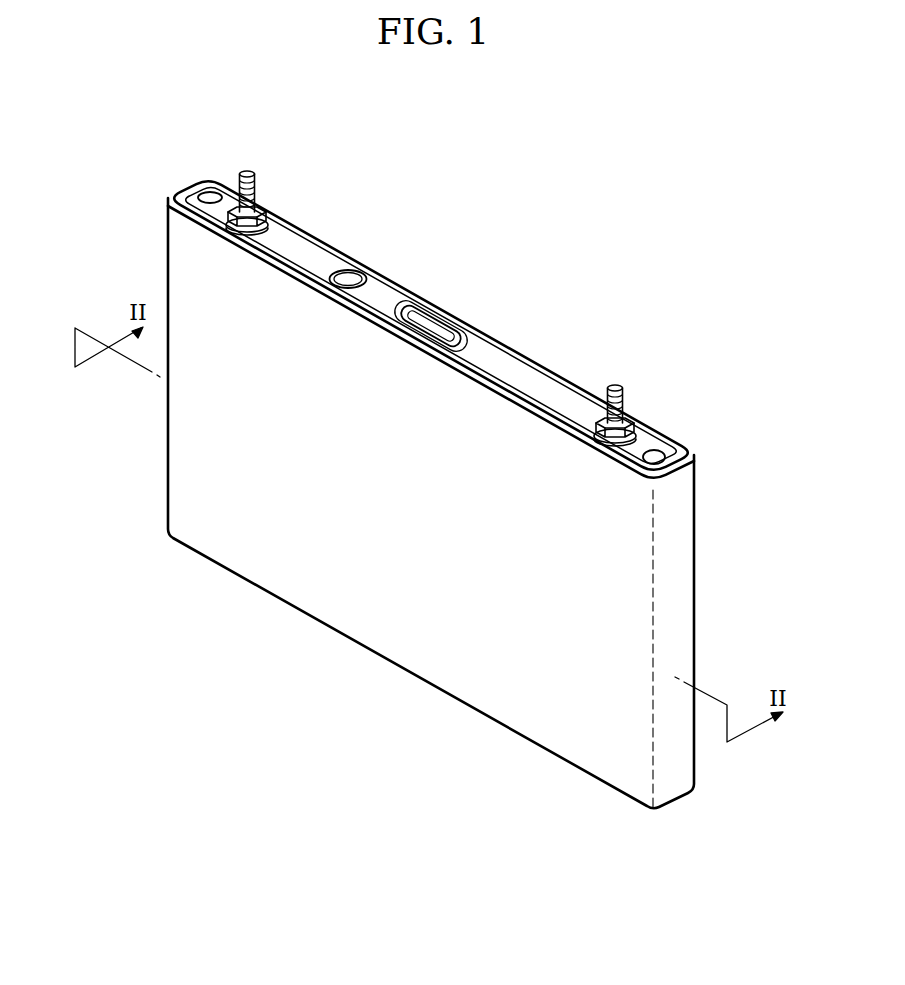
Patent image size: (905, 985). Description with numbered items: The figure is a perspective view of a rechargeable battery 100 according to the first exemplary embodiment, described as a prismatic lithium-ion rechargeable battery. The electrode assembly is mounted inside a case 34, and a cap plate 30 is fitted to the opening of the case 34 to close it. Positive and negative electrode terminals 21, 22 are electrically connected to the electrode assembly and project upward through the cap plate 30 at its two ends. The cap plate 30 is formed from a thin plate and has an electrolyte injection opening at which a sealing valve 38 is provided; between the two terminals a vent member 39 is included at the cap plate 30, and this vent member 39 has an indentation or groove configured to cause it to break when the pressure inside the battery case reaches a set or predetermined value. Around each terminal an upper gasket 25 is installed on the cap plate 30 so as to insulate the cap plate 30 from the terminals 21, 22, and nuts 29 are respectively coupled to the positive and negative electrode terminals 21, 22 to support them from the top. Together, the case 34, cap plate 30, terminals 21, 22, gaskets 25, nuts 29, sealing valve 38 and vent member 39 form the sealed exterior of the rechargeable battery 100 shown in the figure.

The rechargeable battery 100 is at (520, 327).
The positive electrode terminal 21 is at (247, 174).
The negative electrode terminal 22 is at (614, 388).
The upper gasket 25 is at (649, 438).
The nut 29 is at (637, 427).
The cap plate 30 is at (395, 279).
The case 34 is at (383, 639).
The sealing valve 38 is at (349, 271).
The vent member 39 is at (437, 322).